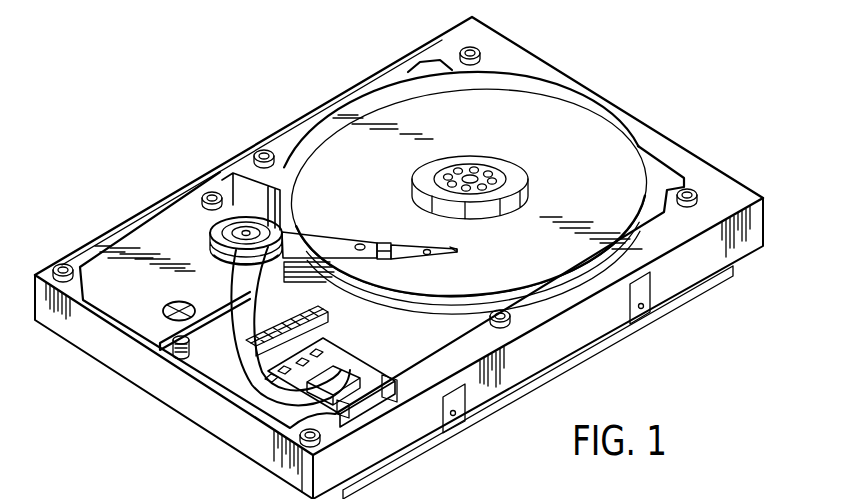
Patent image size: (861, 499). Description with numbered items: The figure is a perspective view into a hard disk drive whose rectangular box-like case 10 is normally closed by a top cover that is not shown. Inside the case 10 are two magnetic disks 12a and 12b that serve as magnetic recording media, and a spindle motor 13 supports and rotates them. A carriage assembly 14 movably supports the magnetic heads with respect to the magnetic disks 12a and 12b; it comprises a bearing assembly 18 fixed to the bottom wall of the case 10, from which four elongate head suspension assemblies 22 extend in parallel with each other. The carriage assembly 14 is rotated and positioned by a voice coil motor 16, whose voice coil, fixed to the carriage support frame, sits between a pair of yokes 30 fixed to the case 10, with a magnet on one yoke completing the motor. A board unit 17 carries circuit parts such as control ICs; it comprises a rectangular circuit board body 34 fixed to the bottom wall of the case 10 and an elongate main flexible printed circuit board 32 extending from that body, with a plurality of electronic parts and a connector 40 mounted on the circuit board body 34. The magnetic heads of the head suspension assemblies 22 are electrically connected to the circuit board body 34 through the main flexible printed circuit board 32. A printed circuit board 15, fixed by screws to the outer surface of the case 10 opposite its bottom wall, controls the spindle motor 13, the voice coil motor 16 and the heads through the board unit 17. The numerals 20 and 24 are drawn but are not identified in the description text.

The case 10 is at (677, 284).
The magnetic disk 12a is at (594, 130).
The magnetic disk 12b is at (452, 316).
The spindle motor 13 is at (514, 178).
The carriage assembly 14 is at (317, 250).
The printed circuit board 15 is at (433, 454).
The voice coil motor 16 is at (147, 296).
The board unit 17 is at (352, 352).
The bearing assembly 18 is at (281, 222).
The head mount block 20 is at (353, 241).
The head suspension assembly 22 is at (448, 246).
The head suspension 24 is at (410, 255).
The yoke 30 is at (152, 223).
The main flexible printed circuit board 32 is at (274, 403).
The circuit board body 34 is at (371, 370).
The connector 40 is at (324, 316).